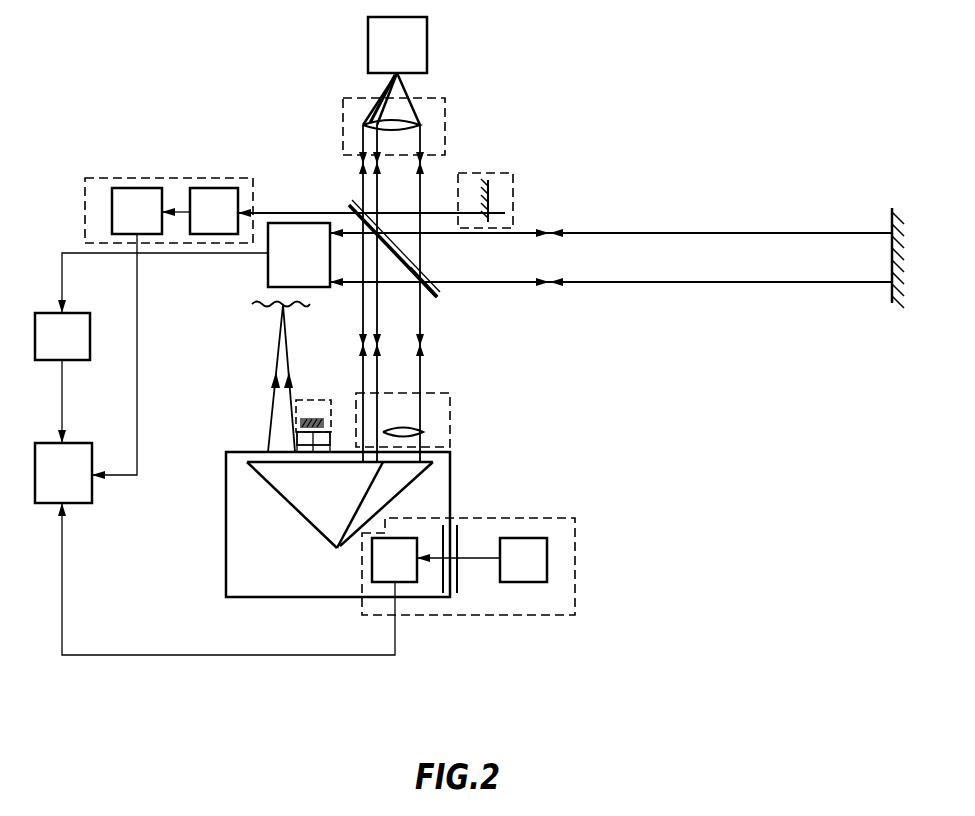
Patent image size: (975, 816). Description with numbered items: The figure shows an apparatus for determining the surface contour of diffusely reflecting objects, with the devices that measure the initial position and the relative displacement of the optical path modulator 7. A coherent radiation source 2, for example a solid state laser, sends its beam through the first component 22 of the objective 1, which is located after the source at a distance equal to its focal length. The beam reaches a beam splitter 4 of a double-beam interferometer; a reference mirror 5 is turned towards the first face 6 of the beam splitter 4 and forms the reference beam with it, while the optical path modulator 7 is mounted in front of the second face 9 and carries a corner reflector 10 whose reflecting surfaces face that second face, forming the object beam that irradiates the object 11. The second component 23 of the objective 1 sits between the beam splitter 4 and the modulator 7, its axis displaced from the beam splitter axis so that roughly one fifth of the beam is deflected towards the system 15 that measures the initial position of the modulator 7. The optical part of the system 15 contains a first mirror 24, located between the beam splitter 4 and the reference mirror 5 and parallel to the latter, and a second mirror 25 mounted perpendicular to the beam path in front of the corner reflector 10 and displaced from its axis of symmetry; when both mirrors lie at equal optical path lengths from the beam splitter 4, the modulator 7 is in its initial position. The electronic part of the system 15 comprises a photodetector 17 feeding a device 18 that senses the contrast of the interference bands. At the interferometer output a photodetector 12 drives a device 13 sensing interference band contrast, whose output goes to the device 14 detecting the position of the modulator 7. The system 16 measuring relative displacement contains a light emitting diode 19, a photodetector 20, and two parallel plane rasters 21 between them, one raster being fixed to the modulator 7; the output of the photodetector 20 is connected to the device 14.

The objective 1 is at (403, 268).
The coherent radiation source 2 is at (397, 45).
The beam splitter 4 is at (430, 296).
The reference mirror 5 is at (890, 302).
The first face 6 is at (382, 214).
The optical path modulator 7 is at (392, 504).
The second face 9 is at (408, 290).
The corner reflector 10 is at (338, 524).
The object 11 is at (310, 308).
The photodetector 12 is at (299, 255).
The device sensing contrast of interference bands 13 is at (151, 306).
The device detecting position of the optical path modulator 14 is at (215, 444).
The system measuring initial position of the modulator 15 is at (502, 172).
The system measuring relative displacement of the modulator 16 is at (572, 568).
The photodetector 17 is at (214, 211).
The device sensing contrast of interference bands 18 is at (151, 211).
The light emitting diode 19 is at (482, 560).
The photodetector 20 is at (394, 560).
The parallel plane rasters 21 is at (458, 585).
The first component 22 is at (365, 121).
The second component 23 is at (452, 430).
The first mirror 24 is at (492, 224).
The second mirror 25 is at (328, 426).